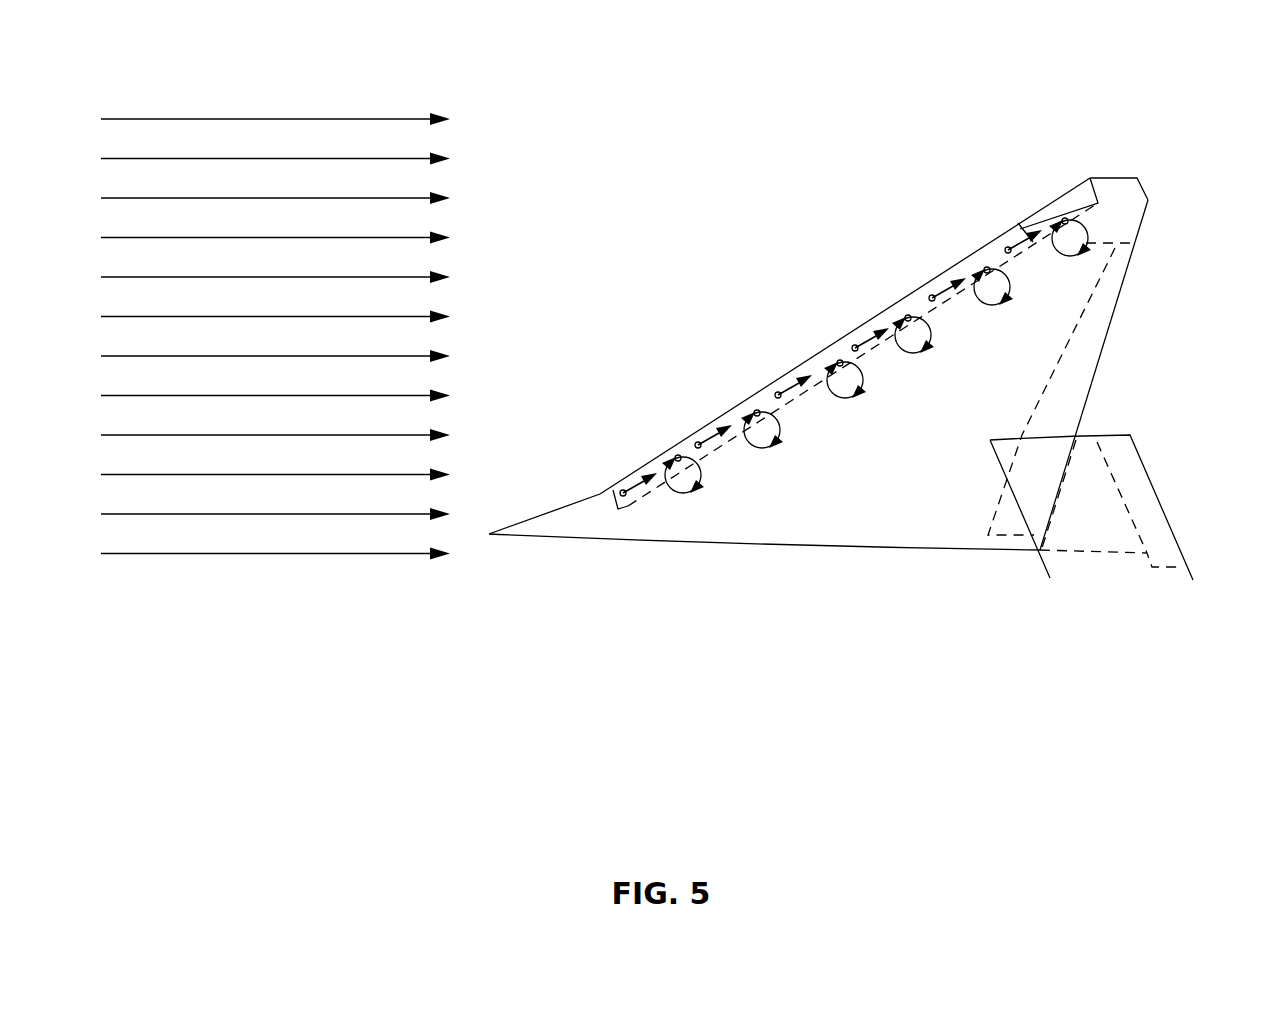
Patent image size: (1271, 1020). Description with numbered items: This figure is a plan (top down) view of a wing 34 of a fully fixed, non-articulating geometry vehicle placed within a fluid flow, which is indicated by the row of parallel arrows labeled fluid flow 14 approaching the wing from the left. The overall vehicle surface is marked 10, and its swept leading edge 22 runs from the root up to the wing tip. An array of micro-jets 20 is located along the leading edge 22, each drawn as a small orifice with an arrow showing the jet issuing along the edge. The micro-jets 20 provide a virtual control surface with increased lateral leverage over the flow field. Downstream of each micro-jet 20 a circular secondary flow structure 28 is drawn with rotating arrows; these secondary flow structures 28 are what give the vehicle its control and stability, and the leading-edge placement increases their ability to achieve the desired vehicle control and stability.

The aircraft wing 10 is at (843, 340).
The fluid flow 14 is at (276, 303).
The micro-jet 20 is at (777, 393).
The leading edge 22 is at (849, 343).
The secondary flow structures 28 is at (876, 362).
The wing 34 is at (1128, 182).